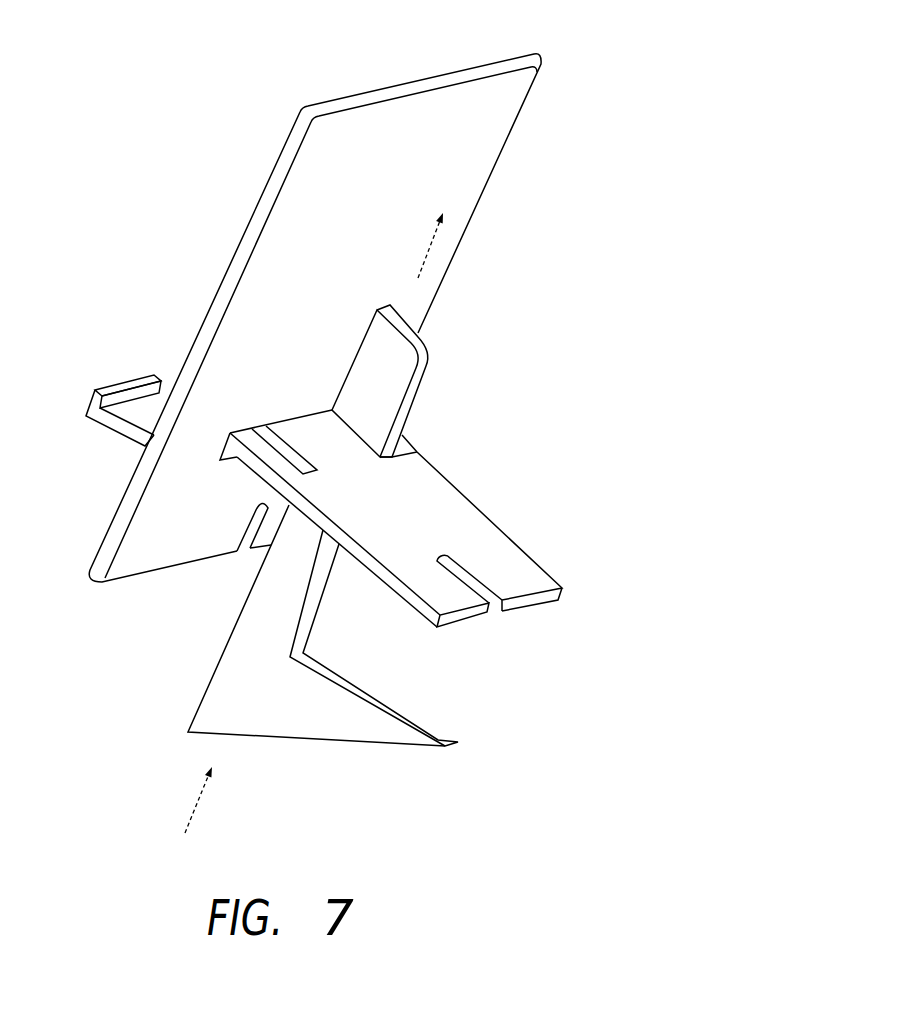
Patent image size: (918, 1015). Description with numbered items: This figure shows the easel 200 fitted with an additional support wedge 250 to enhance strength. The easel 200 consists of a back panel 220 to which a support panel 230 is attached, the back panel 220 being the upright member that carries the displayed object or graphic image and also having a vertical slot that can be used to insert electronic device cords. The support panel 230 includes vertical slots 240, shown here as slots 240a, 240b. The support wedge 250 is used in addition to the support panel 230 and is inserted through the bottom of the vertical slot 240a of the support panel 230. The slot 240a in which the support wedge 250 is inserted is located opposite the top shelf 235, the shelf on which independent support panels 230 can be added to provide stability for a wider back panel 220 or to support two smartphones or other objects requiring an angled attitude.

The easel 200 is at (206, 146).
The back panel 220 is at (460, 157).
The support panel 230 is at (487, 540).
The top shelf 235 is at (140, 418).
The vertical slot 240 is at (243, 547).
The vertical slot 240a is at (415, 452).
The slot 240b is at (490, 605).
The support wedge 250 is at (402, 367).